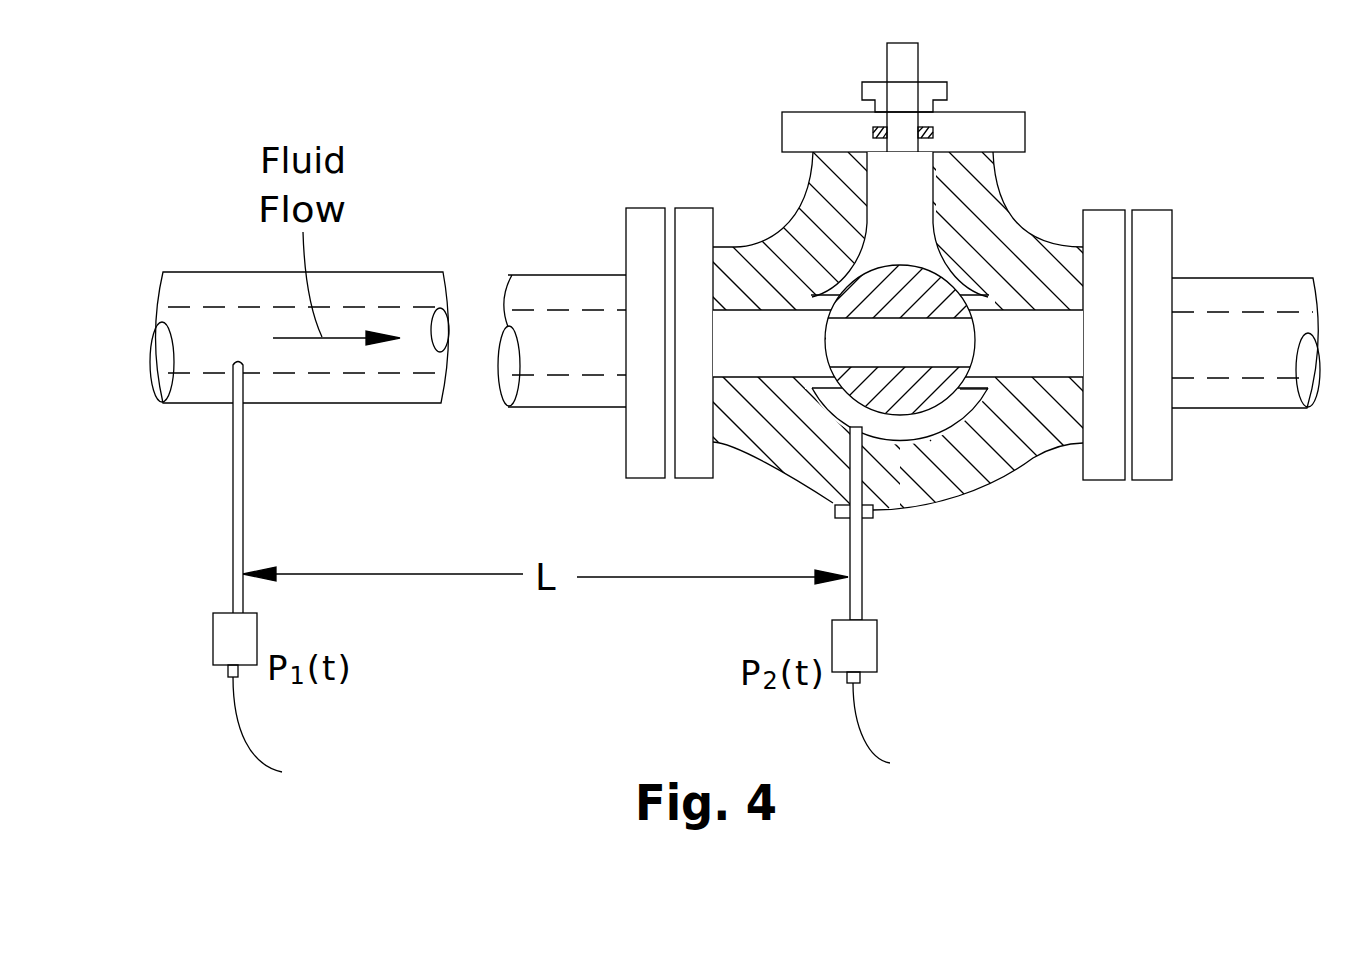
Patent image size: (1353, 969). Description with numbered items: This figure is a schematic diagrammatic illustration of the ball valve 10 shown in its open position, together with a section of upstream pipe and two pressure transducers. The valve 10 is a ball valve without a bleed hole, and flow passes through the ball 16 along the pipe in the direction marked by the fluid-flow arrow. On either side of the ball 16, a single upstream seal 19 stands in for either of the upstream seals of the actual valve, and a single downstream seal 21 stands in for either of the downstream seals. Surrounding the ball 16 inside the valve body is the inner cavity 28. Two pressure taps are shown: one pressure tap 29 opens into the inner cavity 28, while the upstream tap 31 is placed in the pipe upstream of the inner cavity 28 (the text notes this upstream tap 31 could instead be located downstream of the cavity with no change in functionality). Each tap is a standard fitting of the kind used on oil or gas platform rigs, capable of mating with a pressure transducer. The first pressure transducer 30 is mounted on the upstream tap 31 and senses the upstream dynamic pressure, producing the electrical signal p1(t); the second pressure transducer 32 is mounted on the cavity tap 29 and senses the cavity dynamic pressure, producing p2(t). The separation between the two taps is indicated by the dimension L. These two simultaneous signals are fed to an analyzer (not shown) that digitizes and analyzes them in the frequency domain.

The valve 10 is at (1088, 133).
The ball 16 is at (962, 283).
The upstream seal 19 is at (743, 445).
The downstream seal 21 is at (995, 383).
The inner cavity 28 is at (933, 428).
The pressure tap 29 is at (835, 508).
The first pressure transducer 30 is at (213, 640).
The upstream pressure tap 31 is at (230, 403).
The second pressure transducer 32 is at (877, 640).